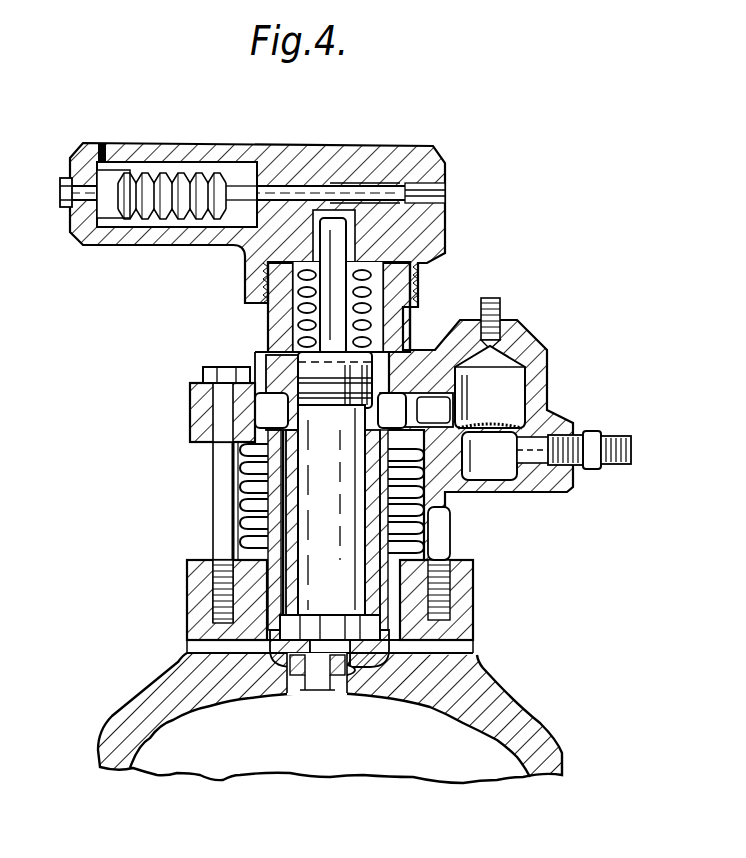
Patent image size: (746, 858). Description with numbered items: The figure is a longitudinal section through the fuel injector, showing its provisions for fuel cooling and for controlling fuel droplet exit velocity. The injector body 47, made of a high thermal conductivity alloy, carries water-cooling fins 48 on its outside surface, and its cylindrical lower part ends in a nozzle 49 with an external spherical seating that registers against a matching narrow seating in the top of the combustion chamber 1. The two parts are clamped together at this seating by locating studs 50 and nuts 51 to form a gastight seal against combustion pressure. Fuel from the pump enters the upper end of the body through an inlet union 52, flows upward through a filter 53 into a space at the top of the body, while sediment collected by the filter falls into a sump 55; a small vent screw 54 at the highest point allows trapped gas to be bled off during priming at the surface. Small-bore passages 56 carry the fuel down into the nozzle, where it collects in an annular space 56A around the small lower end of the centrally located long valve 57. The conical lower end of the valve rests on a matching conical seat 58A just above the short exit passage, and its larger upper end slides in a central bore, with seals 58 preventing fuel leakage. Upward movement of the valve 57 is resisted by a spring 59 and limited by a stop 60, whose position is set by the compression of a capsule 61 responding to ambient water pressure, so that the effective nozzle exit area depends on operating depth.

The combustion chamber 1 is at (528, 718).
The injector body 47 is at (200, 412).
The water-cooling fins 48 is at (245, 497).
The nozzle 49 is at (298, 660).
The locating studs 50 is at (222, 540).
The nuts 51 is at (236, 370).
The inlet union 52 is at (590, 472).
The filter 53 is at (503, 440).
The vent screw 54 is at (496, 306).
The sump 55 is at (466, 496).
The small-bore passages 56 is at (243, 466).
The annular space 56A is at (468, 640).
The valve 57 is at (336, 662).
The seals 58 is at (352, 410).
The conical seat 58A is at (373, 675).
The spring 59 is at (305, 320).
The stop 60 is at (318, 188).
The capsule 61 is at (165, 178).